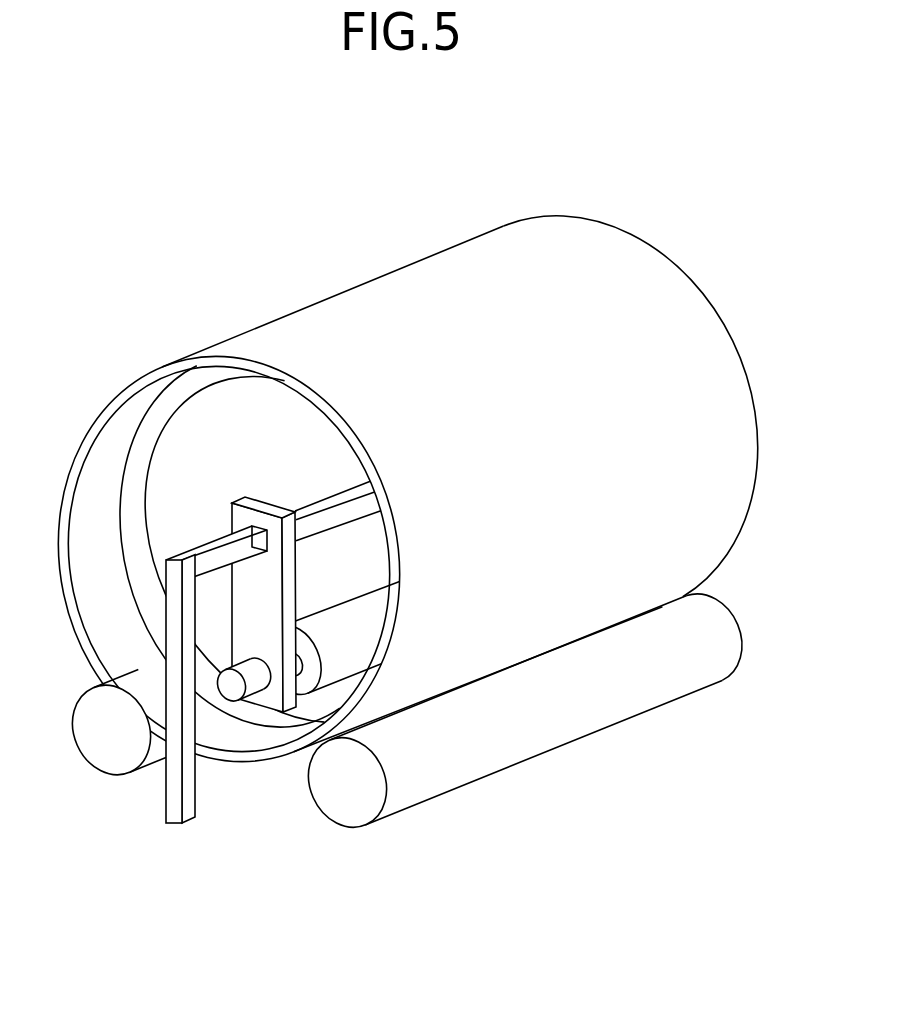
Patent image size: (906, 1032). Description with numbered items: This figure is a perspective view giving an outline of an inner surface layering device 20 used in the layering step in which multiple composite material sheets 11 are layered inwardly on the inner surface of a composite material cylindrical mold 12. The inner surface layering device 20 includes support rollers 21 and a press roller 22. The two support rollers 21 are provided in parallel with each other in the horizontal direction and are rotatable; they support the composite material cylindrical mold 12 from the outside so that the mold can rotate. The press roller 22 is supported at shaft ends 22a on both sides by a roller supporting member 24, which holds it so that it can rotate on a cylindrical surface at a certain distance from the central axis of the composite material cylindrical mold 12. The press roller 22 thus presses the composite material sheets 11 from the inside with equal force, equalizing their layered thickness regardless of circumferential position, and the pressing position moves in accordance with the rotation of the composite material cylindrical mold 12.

The composite material sheets 11 is at (150, 427).
The composite material cylindrical mold 12 is at (628, 268).
The inner surface layering device 20 is at (233, 856).
The support rollers 21 is at (100, 758).
The press roller 22 is at (332, 658).
The shaft ends 22a is at (232, 697).
The roller supporting member 24 is at (174, 820).